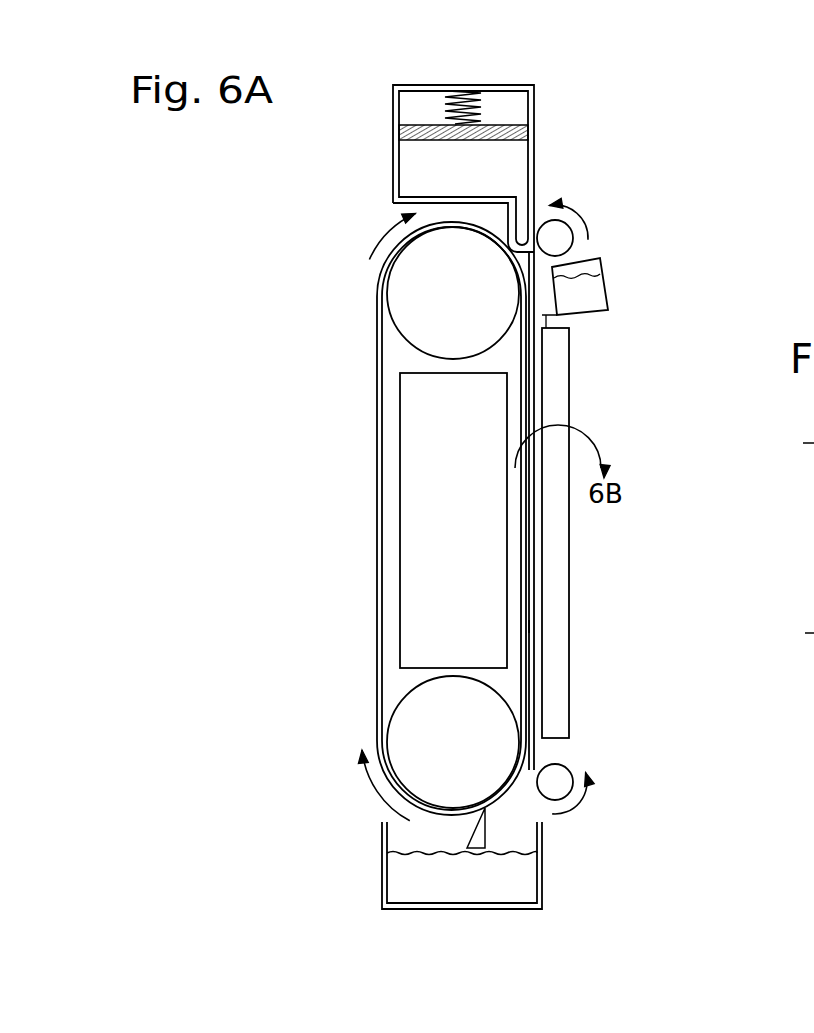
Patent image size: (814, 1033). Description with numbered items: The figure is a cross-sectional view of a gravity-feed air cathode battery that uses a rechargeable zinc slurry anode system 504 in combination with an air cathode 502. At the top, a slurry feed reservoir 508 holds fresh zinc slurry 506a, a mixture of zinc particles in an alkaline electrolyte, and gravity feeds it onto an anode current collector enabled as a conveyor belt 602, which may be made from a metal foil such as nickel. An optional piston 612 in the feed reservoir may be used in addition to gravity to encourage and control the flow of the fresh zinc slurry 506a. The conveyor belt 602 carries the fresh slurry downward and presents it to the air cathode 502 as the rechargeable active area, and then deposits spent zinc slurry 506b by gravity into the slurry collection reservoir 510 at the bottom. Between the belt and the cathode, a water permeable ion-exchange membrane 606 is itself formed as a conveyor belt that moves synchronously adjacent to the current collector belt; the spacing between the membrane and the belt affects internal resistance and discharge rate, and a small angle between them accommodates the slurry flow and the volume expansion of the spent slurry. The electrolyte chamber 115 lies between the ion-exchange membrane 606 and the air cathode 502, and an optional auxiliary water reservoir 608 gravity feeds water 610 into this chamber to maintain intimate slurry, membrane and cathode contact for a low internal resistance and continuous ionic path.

The slurry feed reservoir 508 is at (393, 176).
The piston 612 is at (397, 133).
The fresh zinc slurry 506a is at (517, 168).
The water 610 is at (592, 290).
The auxiliary water reservoir 608 is at (608, 300).
The air cathode 502 is at (557, 392).
The electrolyte chamber 115 is at (543, 578).
The water permeable ion-exchange membrane 606 is at (538, 743).
The zinc slurry anode system 504 is at (328, 544).
The conveyor belt anode current collector 602 is at (310, 793).
The slurry collection reservoir 510 is at (382, 875).
The spent zinc slurry 506b is at (517, 871).